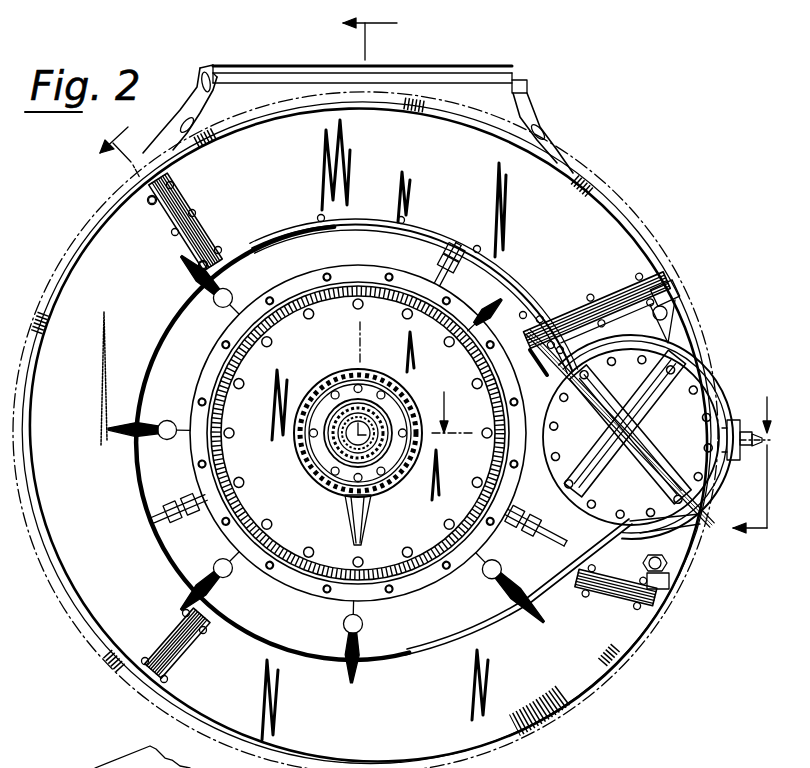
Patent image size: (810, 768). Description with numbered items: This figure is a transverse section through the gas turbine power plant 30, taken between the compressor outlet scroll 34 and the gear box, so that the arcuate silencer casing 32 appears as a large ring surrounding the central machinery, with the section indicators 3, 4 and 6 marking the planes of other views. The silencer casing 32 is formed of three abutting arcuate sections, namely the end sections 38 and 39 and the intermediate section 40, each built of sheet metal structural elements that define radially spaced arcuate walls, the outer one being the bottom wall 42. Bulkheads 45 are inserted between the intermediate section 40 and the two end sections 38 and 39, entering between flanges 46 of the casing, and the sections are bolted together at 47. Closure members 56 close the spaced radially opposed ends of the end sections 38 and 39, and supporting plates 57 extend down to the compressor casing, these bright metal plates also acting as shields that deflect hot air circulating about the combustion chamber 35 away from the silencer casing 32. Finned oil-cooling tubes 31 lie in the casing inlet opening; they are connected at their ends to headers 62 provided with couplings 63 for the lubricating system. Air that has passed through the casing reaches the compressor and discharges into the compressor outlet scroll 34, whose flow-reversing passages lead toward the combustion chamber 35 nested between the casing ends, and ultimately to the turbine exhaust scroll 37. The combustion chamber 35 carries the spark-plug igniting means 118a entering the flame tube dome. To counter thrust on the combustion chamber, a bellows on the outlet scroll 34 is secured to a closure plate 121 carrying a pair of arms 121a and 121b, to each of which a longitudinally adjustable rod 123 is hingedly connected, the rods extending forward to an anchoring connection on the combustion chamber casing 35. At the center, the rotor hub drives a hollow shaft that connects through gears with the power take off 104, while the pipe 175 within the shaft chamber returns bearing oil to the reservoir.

The section line 3- 3 is at (555, 291).
The section line 4- 4 is at (124, 148).
The section line 6- 6 is at (565, 381).
The gas turbine power plant 30 is at (628, 182).
The finned oil-cooling tubes 31 is at (565, 702).
The silencer casing 32 is at (82, 234).
The compressor outlet scroll 34 is at (437, 631).
The combustion chamber 35 is at (683, 346).
The turbine exhaust scroll 37 is at (495, 105).
The end section 38 is at (530, 180).
The end section 39 is at (435, 704).
The intermediate section 40 is at (89, 399).
The bottom wall 42 is at (518, 293).
The bulkheads 45 is at (172, 205).
The flanges 46 is at (193, 250).
The bolts 47 is at (177, 627).
The closure members 56 is at (617, 313).
The supporting plates 57 is at (545, 372).
The headers 62 is at (672, 311).
The couplings 63 is at (665, 297).
The power take off 104 is at (347, 447).
The spark-plug igniting means 118a is at (733, 455).
The closure plate 121 is at (632, 430).
The arm 121a is at (631, 434).
The arm 121b is at (624, 430).
The longitudinally adjustable rod 123 is at (560, 583).
The pipe 175 is at (366, 520).